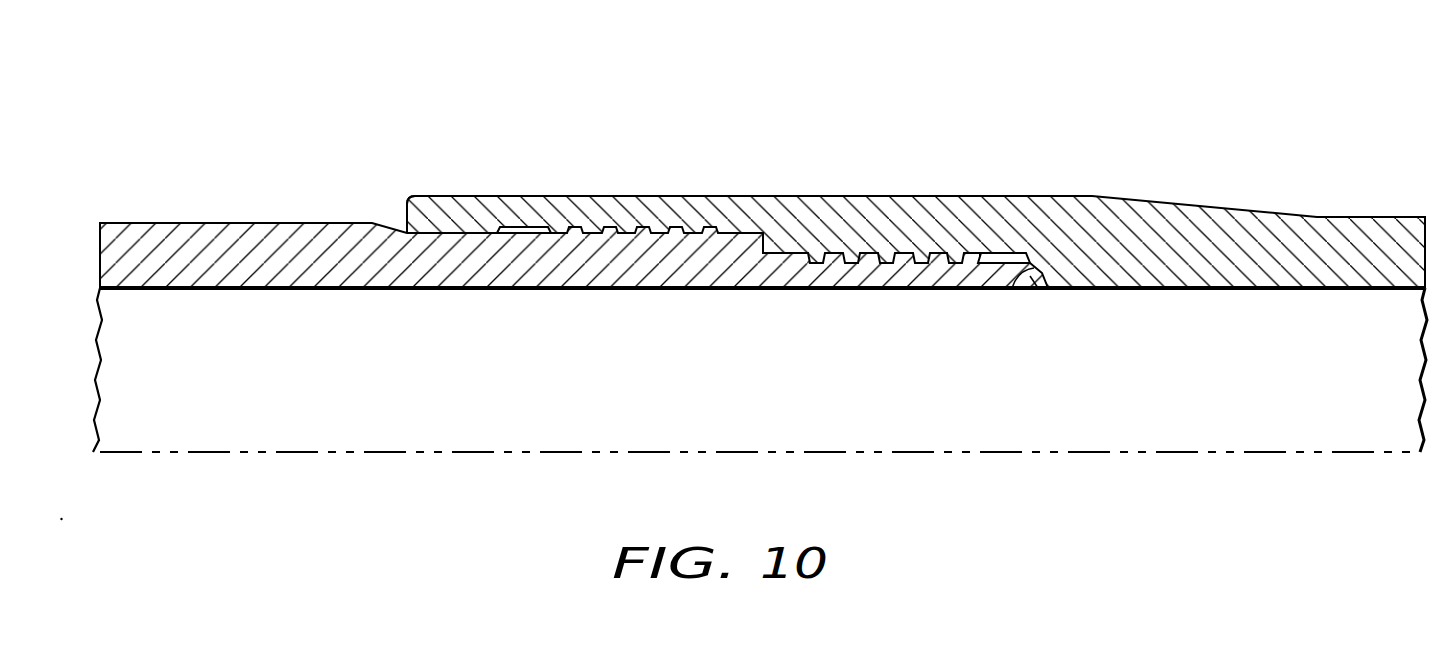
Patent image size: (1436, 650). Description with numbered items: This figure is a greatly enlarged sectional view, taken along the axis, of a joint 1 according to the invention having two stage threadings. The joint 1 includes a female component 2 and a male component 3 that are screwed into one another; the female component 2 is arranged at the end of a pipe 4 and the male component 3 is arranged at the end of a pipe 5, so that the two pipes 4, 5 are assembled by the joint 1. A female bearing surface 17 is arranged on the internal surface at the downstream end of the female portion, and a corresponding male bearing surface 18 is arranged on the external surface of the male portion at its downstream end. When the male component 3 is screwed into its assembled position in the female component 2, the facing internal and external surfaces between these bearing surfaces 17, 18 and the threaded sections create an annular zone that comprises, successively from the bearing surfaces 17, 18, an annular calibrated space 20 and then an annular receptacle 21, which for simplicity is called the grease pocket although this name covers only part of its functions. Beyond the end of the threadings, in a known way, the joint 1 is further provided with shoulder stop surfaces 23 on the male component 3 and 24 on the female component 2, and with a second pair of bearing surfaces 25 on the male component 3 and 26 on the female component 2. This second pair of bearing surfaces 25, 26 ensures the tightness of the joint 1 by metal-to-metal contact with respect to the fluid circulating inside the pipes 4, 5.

The joint 1 is at (598, 124).
The female component 2 is at (713, 189).
The male component 3 is at (680, 292).
The pipe 4 is at (1222, 222).
The pipe 5 is at (272, 232).
The female bearing surface 17 is at (410, 177).
The male bearing surface 18 is at (409, 232).
The annular calibrated space 20 is at (467, 234).
The annular receptacle 21 is at (532, 228).
The shoulder stop surface 23 is at (1047, 288).
The shoulder stop surface 24 is at (1020, 290).
The second bearing surface 25 is at (1033, 267).
The second bearing surface 26 is at (1010, 292).